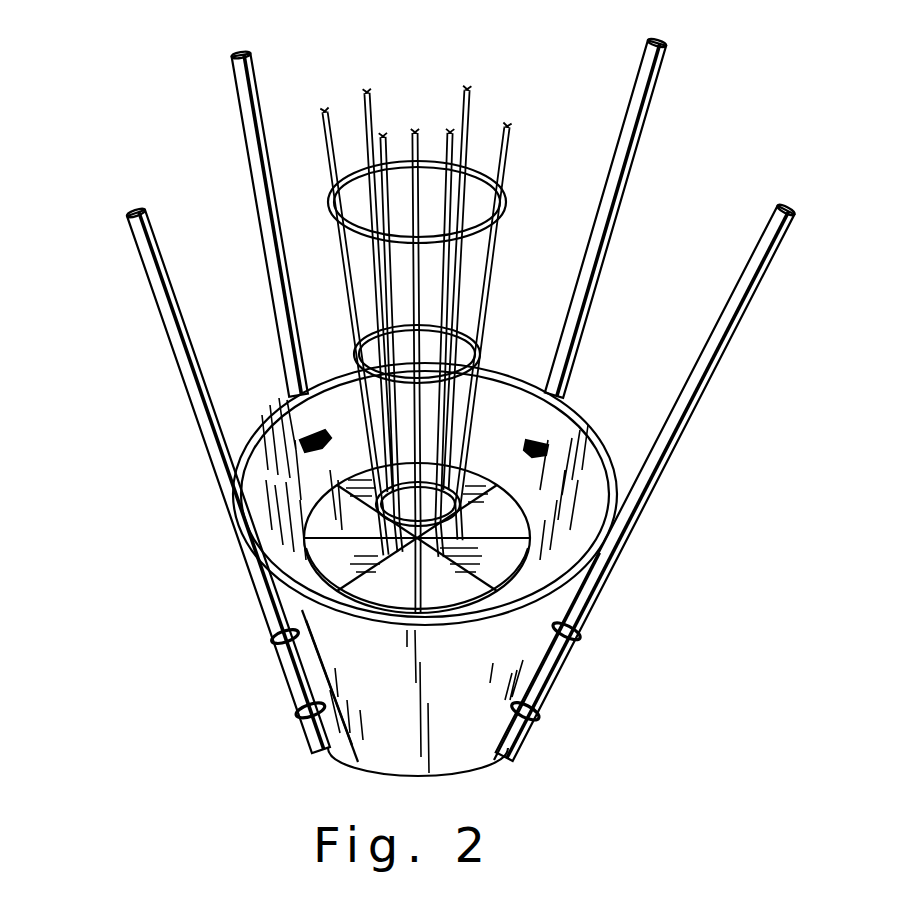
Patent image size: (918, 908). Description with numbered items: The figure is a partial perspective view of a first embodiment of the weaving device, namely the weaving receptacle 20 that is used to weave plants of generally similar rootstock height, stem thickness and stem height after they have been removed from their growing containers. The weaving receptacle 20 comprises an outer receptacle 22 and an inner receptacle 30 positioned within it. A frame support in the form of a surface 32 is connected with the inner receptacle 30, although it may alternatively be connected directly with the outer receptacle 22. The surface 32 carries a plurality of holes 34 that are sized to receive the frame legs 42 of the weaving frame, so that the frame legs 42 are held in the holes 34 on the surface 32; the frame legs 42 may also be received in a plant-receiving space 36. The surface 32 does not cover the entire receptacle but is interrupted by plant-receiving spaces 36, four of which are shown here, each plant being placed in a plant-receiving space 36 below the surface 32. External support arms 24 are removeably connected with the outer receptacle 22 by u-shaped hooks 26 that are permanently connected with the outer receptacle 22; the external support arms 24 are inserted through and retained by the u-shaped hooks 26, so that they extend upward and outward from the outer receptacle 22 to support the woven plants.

The weaving receptacle 20 is at (273, 702).
The outer receptacle 22 is at (459, 723).
The external support arms 24 is at (243, 77).
The u-shaped hooks 26 is at (579, 632).
The inner receptacle 30 is at (313, 520).
The surface 32 is at (503, 483).
The holes 34 is at (480, 545).
The plant-receiving spaces 36 is at (356, 596).
The frame legs 42 is at (500, 187).